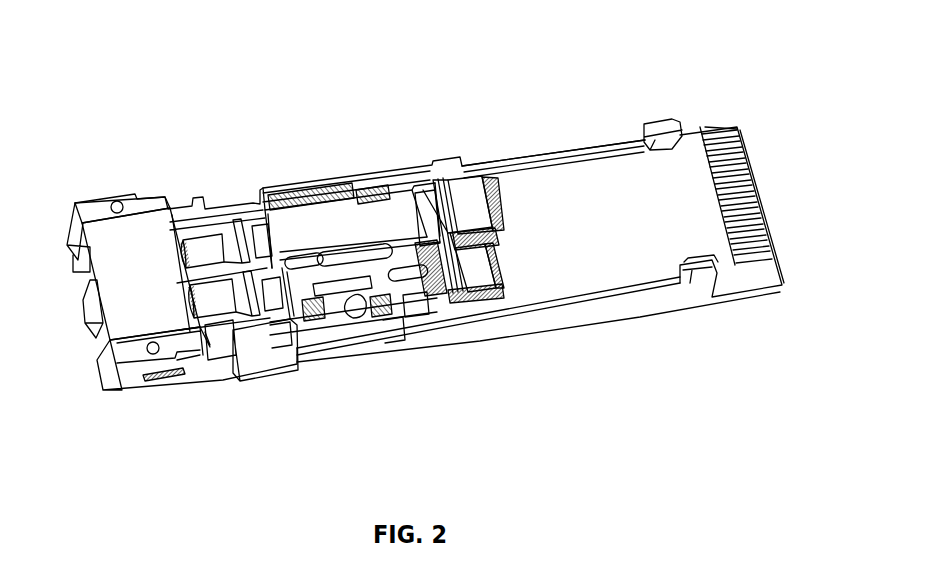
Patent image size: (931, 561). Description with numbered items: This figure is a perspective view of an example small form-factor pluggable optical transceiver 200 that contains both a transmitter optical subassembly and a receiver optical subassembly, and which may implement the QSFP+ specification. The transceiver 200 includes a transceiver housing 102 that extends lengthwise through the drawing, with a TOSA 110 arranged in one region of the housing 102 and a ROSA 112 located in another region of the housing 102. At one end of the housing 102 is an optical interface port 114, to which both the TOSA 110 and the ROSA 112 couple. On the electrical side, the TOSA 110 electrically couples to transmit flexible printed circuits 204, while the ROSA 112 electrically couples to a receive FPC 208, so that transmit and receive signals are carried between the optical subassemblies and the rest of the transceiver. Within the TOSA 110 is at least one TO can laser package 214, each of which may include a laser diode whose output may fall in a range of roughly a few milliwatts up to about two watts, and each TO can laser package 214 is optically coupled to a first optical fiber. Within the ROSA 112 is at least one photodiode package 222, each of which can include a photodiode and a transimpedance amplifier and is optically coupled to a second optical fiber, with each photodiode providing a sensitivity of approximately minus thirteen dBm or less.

The optical transceiver 200 is at (233, 108).
The optical interface port 114 is at (93, 212).
The photodiode package 222 is at (332, 198).
The ROSA 112 is at (362, 220).
The transceiver housing 102 is at (487, 152).
The receive FPC 208 is at (500, 208).
The transmit flexible printed circuits 204 is at (503, 250).
The TOSA 110 is at (410, 280).
The TO can laser package 214 is at (327, 320).